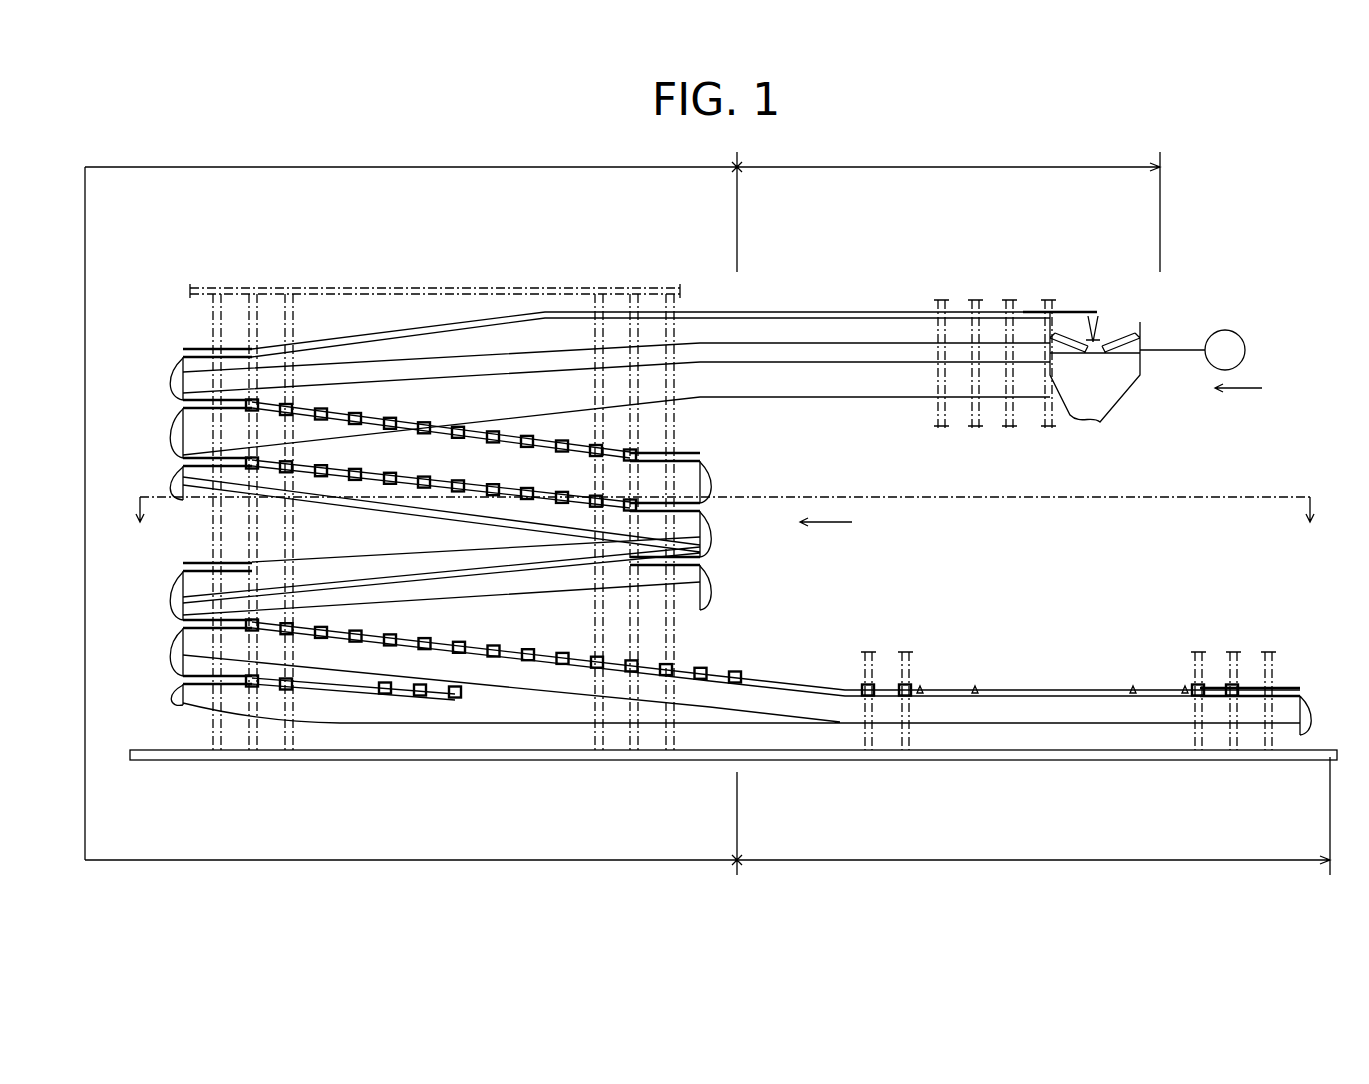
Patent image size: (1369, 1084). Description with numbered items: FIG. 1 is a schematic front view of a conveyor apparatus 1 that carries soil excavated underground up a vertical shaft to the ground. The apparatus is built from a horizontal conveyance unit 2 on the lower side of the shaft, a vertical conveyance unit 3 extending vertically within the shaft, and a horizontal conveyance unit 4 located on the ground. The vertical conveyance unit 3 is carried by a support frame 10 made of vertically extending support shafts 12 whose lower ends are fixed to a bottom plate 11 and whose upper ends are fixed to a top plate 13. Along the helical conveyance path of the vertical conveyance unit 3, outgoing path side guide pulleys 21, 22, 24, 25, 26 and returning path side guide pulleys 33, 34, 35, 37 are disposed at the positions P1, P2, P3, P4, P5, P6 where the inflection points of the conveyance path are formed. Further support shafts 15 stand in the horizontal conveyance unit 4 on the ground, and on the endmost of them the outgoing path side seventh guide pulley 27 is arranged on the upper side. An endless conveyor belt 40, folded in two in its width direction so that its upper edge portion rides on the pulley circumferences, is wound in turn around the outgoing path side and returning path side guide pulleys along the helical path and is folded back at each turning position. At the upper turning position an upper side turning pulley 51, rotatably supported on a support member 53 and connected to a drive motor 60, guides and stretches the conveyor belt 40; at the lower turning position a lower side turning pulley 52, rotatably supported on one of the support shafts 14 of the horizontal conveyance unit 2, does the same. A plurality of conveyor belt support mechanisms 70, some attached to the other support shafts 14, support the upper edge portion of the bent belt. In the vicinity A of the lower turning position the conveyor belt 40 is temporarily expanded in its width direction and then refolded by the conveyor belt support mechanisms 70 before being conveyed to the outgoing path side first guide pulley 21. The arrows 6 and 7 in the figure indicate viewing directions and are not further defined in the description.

The conveyor apparatus 1 is at (921, 276).
The horizontal conveyance unit 2 is at (1012, 860).
The vertical conveyance unit 3 is at (460, 860).
The horizontal conveyance unit 4 is at (933, 167).
The viewing direction arrow 6 is at (836, 523).
The viewing direction arrow 7 is at (1249, 389).
The support frame 10 is at (435, 470).
The bottom plate 11 is at (410, 760).
The support shaft 12 is at (289, 330).
The top plate 13 is at (352, 288).
The support shaft 14 is at (906, 650).
The support shaft 15 is at (1049, 297).
The outgoing path side first guide pulley 21 is at (183, 624).
The outgoing path side second guide pulley 22 is at (183, 567).
The outgoing path side fourth guide pulley 24 is at (700, 456).
The outgoing path side fifth guide pulley 25 is at (183, 404).
The outgoing path side sixth guide pulley 26 is at (183, 352).
The outgoing path side seventh guide pulley 27 is at (1072, 312).
The returning path side third guide pulley 33 is at (183, 462).
The returning path side fourth guide pulley 34 is at (700, 507).
The returning path side fifth guide pulley 35 is at (700, 560).
The returning path side seventh guide pulley 37 is at (183, 680).
The conveyor belt 40 is at (790, 676).
The upper side turning pulley 51 is at (1094, 320).
The lower side turning pulley 52 is at (1283, 688).
The support member 53 is at (1120, 395).
The drive motor 60 is at (1226, 330).
The conveyor belt support mechanism 70 is at (287, 625).
The position P1 is at (218, 612).
The position P2 is at (212, 562).
The position P3 is at (682, 592).
The position P4 is at (672, 448).
The position P5 is at (205, 392).
The position P6 is at (205, 341).
The vicinity of the turning position A is at (1058, 690).